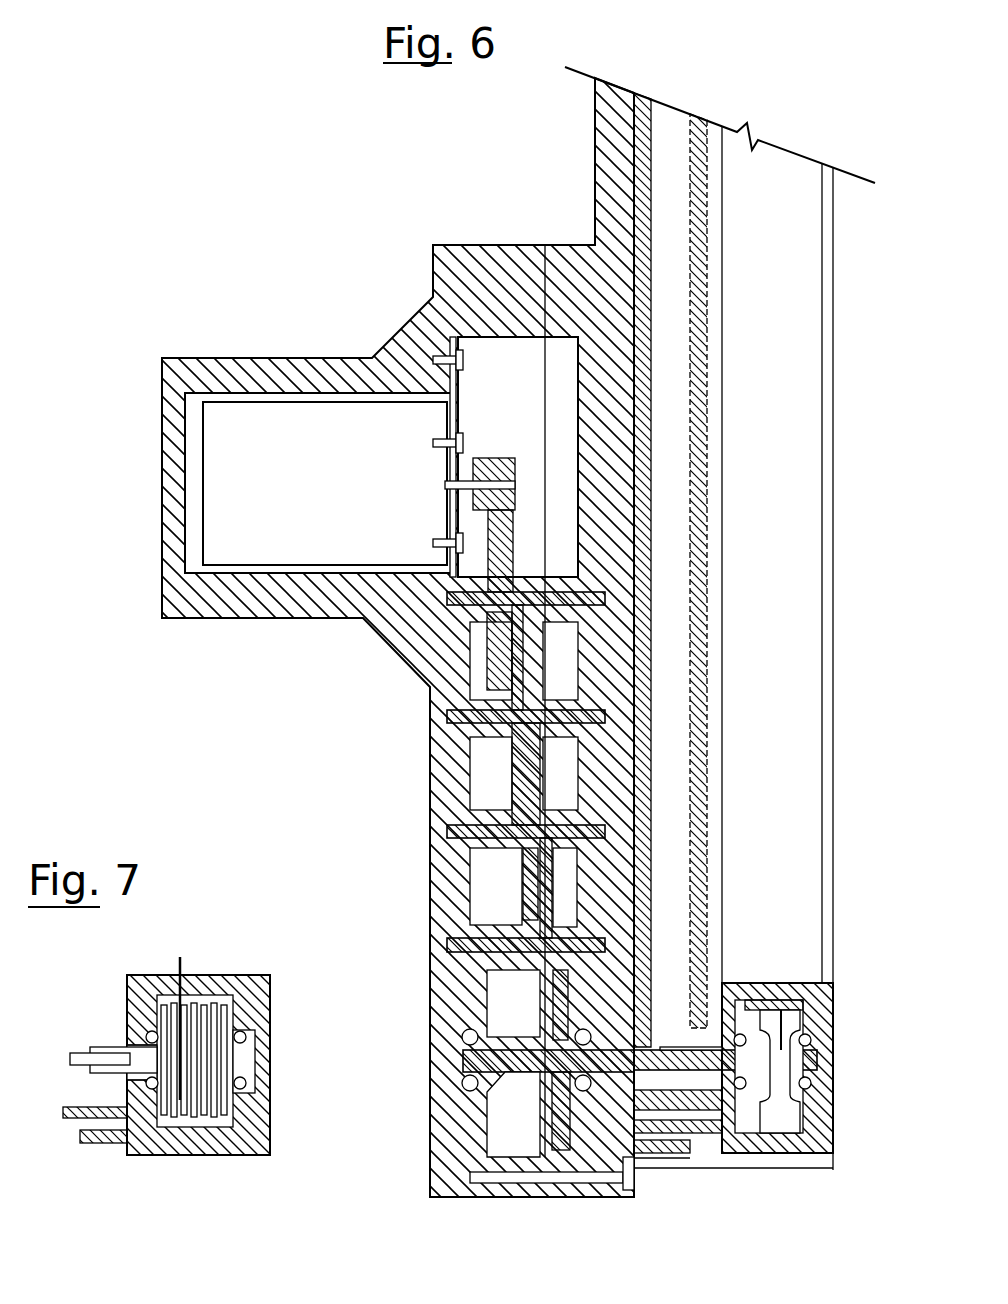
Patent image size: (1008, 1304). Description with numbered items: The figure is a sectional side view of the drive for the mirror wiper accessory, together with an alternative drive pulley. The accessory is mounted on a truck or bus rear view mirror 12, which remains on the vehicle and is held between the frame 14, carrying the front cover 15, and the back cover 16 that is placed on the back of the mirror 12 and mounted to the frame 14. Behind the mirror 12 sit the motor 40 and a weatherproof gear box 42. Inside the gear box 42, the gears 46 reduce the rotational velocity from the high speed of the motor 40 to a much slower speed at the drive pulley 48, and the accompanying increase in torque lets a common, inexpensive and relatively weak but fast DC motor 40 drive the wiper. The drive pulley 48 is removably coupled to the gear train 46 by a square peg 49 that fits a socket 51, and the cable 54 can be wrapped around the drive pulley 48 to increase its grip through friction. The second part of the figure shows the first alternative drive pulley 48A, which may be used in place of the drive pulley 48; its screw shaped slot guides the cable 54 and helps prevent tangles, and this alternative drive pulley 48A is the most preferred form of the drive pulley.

In FIG. 6, the rear view mirror 12 is at (690, 680).
In FIG. 6, the frame 14 is at (590, 1198).
In FIG. 6, the front cover 15 is at (835, 1062).
In FIG. 6, the back cover 16 is at (445, 1198).
In FIG. 6, the motor 40 is at (355, 490).
In FIG. 6, the gear box 42 is at (537, 233).
In FIG. 6, the gears 46 is at (494, 525).
In FIG. 6, the drive pulley 48 is at (765, 1112).
In FIG. 7, the first alternative drive pulley 48A is at (215, 1120).
In FIG. 6, the square peg 49 is at (673, 1048).
In FIG. 7, the square peg 49 is at (96, 1020).
In FIG. 6, the socket 51 is at (690, 1073).
In FIG. 6, the cable 54 is at (778, 1010).
In FIG. 7, the cable 54 is at (176, 962).